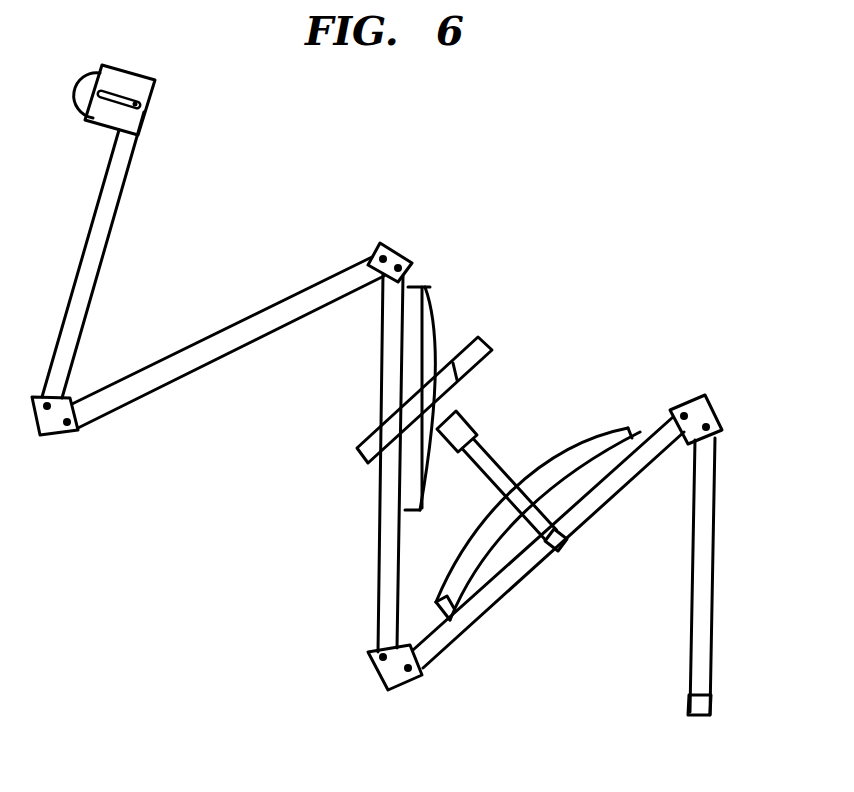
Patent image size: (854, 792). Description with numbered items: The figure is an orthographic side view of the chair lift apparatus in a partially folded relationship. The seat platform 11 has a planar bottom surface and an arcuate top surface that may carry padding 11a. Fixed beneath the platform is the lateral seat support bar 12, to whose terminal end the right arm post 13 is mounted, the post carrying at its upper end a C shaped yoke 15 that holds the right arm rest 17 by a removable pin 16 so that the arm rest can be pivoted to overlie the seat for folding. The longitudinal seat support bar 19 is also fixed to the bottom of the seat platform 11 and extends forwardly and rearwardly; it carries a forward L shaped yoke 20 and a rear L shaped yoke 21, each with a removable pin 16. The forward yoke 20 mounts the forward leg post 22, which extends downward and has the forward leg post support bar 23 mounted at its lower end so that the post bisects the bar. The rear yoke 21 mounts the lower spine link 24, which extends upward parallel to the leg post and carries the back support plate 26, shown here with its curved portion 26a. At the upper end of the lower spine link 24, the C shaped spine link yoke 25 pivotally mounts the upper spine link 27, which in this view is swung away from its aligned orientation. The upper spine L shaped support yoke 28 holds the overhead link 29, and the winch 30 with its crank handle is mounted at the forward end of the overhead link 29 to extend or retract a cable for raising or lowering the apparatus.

The seat platform 11 is at (640, 432).
The padding 11a is at (636, 405).
The lateral seat support bar 12 is at (558, 542).
The right arm post 13 is at (493, 463).
The C shaped yoke 15 is at (463, 427).
The removable pins 16 is at (72, 398).
The right arm rest 17 is at (483, 347).
The longitudinal seat support bar 19 is at (480, 612).
The forward L shaped yoke 20 is at (703, 398).
The rear L shaped yoke 21 is at (370, 677).
The forward leg post 22 is at (703, 492).
The forward leg post support bar 23 is at (700, 705).
The lower spine link 24 is at (378, 528).
The C shaped spine link yoke 25 is at (396, 252).
The back support plate 26 is at (427, 292).
The curved strip portion 26a is at (510, 326).
The upper spine link 27 is at (247, 320).
The upper spine L shaped support yoke 28 is at (42, 432).
The overhead link 29 is at (112, 203).
The winch 30 is at (120, 71).